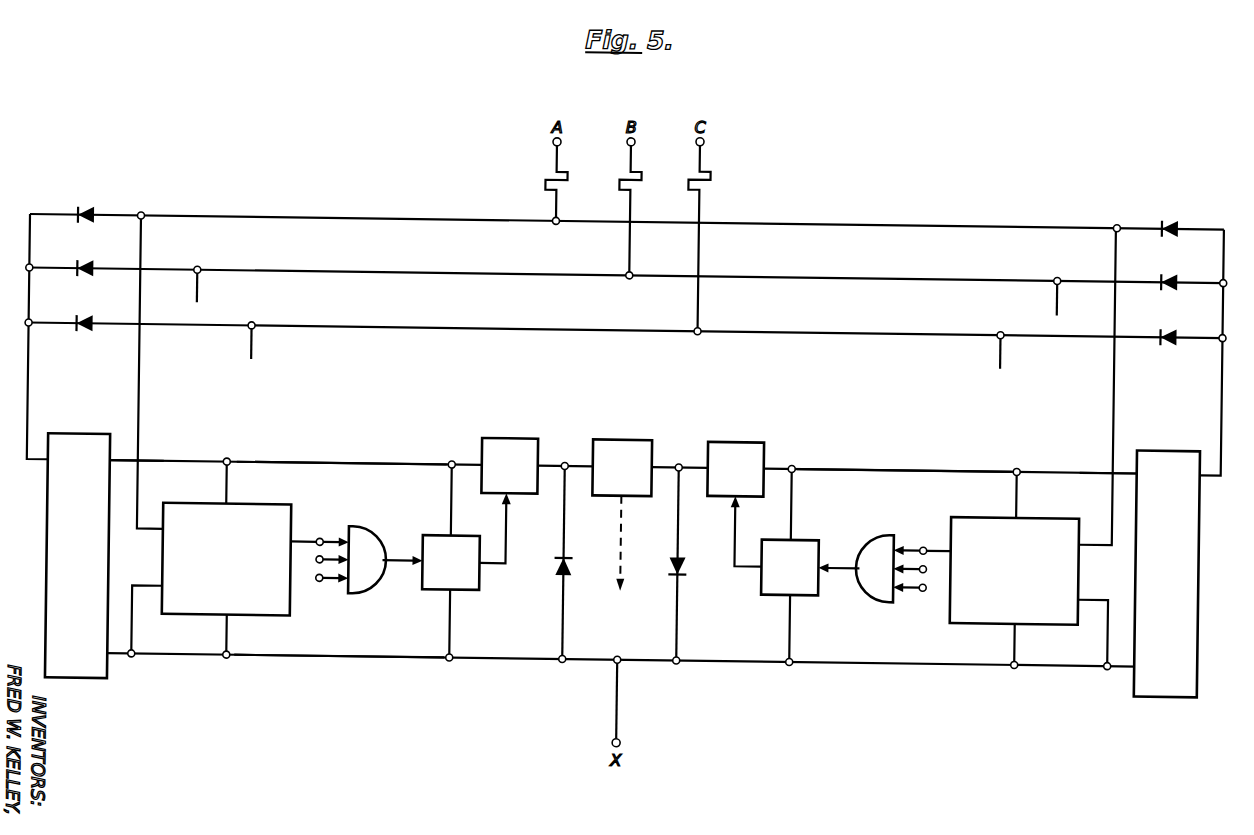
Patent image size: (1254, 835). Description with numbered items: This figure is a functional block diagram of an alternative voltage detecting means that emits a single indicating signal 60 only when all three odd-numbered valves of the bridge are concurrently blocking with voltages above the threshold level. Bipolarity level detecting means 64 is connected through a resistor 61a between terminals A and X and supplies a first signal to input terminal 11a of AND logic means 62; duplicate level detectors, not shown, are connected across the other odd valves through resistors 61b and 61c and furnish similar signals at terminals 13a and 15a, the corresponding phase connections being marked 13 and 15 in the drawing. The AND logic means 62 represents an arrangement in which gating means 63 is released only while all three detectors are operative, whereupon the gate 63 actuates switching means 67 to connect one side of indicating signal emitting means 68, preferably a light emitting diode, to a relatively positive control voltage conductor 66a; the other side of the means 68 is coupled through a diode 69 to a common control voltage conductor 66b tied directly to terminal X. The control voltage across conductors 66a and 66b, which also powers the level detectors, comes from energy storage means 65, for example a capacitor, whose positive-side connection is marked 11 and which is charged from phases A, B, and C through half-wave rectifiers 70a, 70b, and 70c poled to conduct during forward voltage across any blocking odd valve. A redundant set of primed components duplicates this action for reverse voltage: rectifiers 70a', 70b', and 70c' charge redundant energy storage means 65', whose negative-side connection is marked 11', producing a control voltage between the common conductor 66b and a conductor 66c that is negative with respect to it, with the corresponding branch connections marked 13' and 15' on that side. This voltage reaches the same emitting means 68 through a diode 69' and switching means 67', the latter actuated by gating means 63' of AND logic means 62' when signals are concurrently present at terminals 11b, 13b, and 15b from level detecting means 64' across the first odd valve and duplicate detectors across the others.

The half-wave rectifier 70a is at (103, 200).
The half-wave rectifier 70b is at (102, 254).
The half-wave rectifier 70c is at (101, 309).
The half-wave rectifier 70a' is at (1190, 215).
The half-wave rectifier 70b' is at (1189, 268).
The half-wave rectifier 70c' is at (1188, 323).
The resistor 61a is at (545, 176).
The resistor 61b is at (619, 177).
The resistor 61c is at (711, 176).
The supply line 13 is at (626, 292).
The supply line 15 is at (625, 347).
The supply line branch 13' is at (1036, 297).
The supply line branch 15' is at (979, 352).
The positive bus 11 is at (145, 445).
The negative bus 11' is at (1102, 458).
The bipolarity level detecting means 64 is at (211, 557).
The level detecting means 64' is at (1029, 568).
The energy storage means 65 is at (77, 555).
The redundant energy storage means 65' is at (1167, 574).
The relatively positive control voltage conductor 66a is at (329, 458).
The common control voltage conductor 66b is at (341, 654).
The control voltage conductor 66c is at (934, 458).
The switching means 67 is at (509, 466).
The switching means 67' is at (735, 469).
The indicating signal emitting means 68 is at (622, 467).
The gating means 63 is at (466, 561).
The gating means 63' is at (774, 565).
The AND logic means 62 is at (385, 555).
The AND logic means 62' is at (856, 566).
The input terminal 11a is at (322, 534).
The terminal 13a is at (321, 559).
The terminal 15a is at (326, 579).
The terminal 11b is at (928, 535).
The terminal 13b is at (929, 562).
The terminal 15b is at (925, 581).
The diode 69 is at (691, 564).
The diode 69' is at (544, 562).
The indicating signal 60 is at (626, 549).